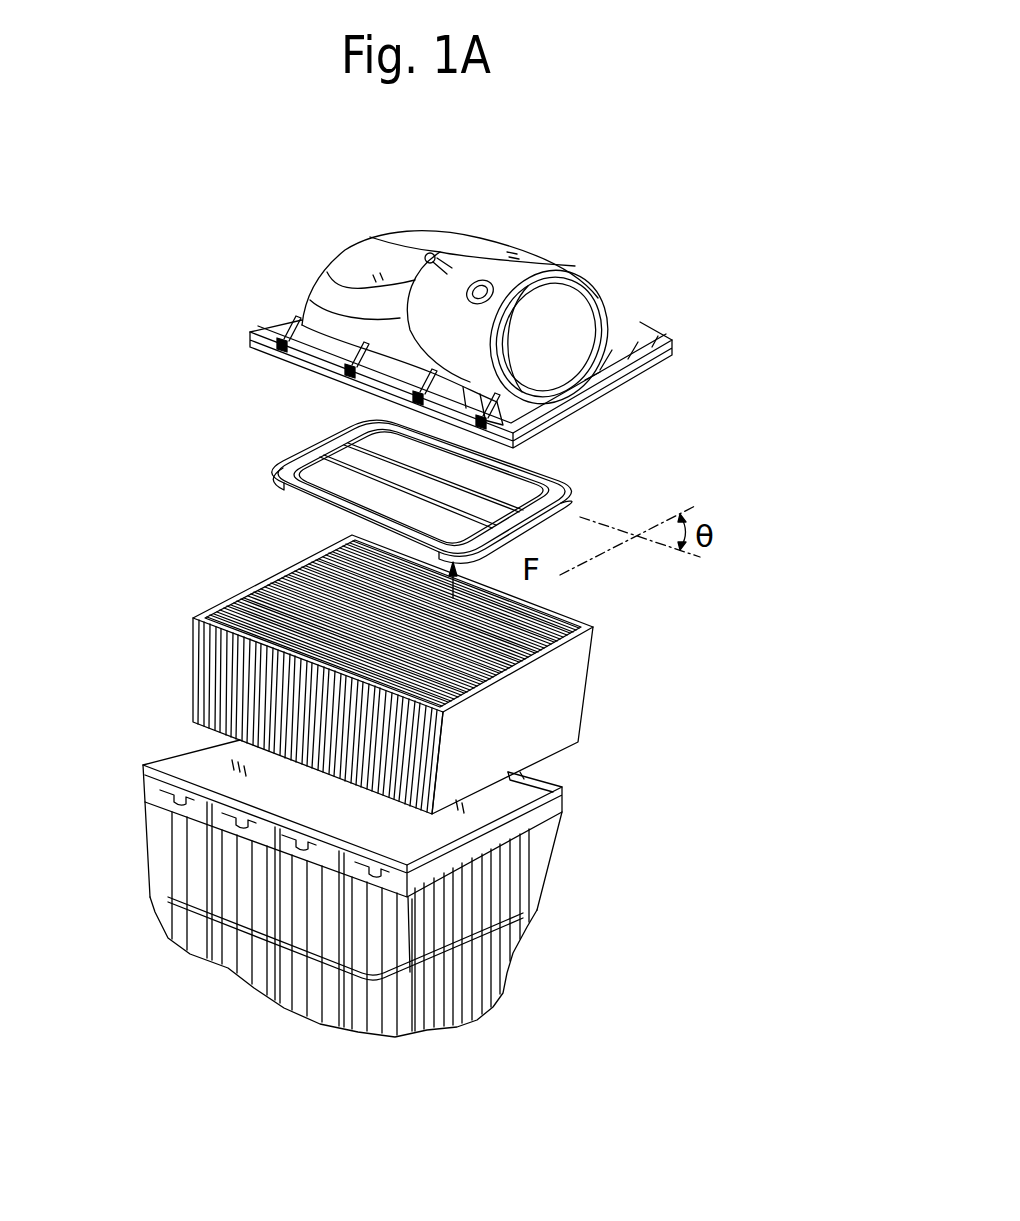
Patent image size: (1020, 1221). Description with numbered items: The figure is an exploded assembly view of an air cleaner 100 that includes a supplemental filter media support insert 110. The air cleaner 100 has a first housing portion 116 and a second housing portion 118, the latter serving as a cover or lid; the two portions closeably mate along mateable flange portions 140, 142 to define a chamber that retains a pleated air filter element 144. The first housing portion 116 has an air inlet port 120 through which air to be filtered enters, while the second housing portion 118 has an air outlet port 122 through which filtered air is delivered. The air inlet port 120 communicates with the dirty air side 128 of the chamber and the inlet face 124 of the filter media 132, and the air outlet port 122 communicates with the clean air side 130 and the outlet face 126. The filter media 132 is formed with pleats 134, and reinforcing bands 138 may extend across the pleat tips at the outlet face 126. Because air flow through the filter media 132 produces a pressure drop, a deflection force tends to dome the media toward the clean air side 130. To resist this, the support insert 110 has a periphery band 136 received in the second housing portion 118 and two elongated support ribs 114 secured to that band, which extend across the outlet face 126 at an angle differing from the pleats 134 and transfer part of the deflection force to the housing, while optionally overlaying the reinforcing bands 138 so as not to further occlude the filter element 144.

The air cleaner 100 is at (745, 258).
The supplemental filter media support insert 110 is at (645, 492).
The elongated support ribs 114 is at (372, 491).
The first housing portion 116 is at (365, 872).
The second housing portion 118 is at (440, 240).
The air inlet port 120 is at (407, 837).
The air outlet port 122 is at (563, 347).
The inlet face 124 is at (212, 780).
The outlet face 126 is at (333, 583).
The dirty air side 128 is at (210, 760).
The clean air side 130 is at (345, 395).
The filter media 132 is at (197, 672).
The filter media pleats 134 is at (587, 618).
The periphery band 136 is at (280, 498).
The reinforcing bands 138 is at (223, 593).
The mateable flange portion 140 is at (548, 777).
The mateable flange portion 142 is at (575, 405).
The air filter element 144 is at (632, 686).